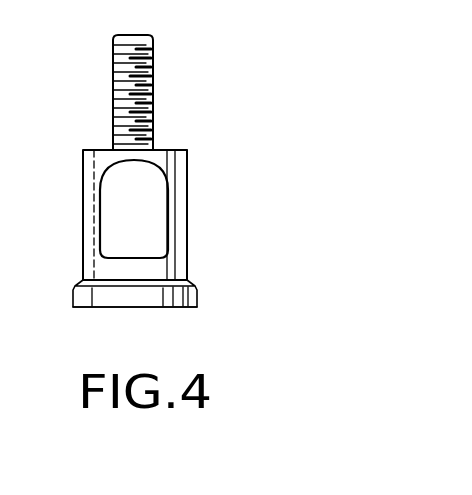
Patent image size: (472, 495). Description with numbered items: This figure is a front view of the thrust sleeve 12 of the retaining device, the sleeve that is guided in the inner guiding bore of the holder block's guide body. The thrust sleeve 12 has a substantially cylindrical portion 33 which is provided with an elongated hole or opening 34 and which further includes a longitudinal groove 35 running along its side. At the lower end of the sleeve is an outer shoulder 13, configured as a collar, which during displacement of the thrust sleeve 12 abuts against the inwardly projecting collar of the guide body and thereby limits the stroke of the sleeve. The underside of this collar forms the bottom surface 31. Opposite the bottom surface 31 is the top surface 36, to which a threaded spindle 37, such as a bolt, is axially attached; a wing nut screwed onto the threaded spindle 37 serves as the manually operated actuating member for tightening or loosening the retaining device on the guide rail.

The thrust sleeve 12 is at (200, 182).
The outer shoulder 13 is at (198, 296).
The bottom surface 31 is at (85, 307).
The cylindrical portion 33 is at (188, 228).
The elongated hole 34 is at (100, 228).
The longitudinal groove 35 is at (86, 190).
The top surface 36 is at (172, 150).
The threaded spindle 37 is at (155, 62).